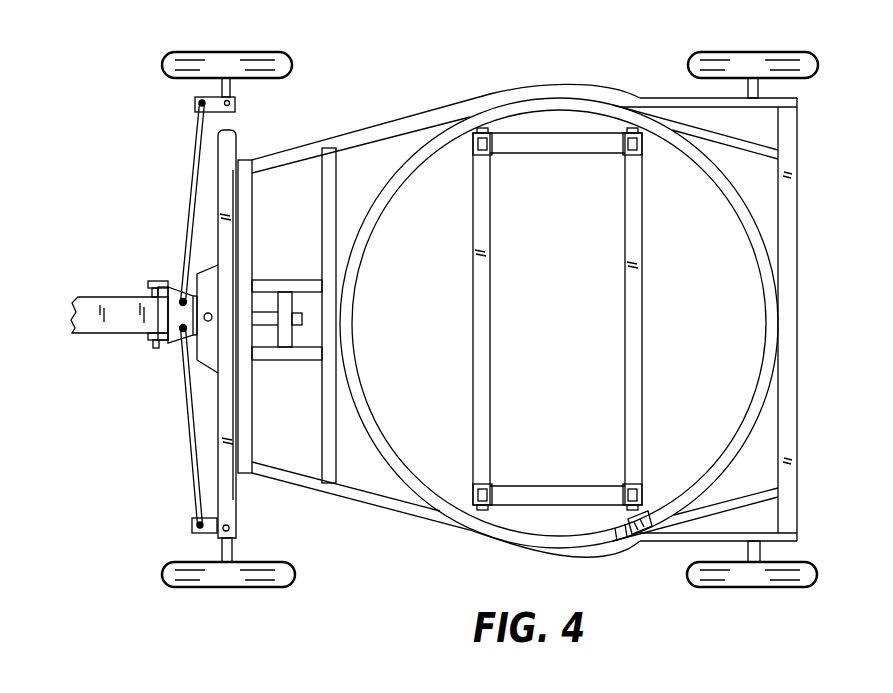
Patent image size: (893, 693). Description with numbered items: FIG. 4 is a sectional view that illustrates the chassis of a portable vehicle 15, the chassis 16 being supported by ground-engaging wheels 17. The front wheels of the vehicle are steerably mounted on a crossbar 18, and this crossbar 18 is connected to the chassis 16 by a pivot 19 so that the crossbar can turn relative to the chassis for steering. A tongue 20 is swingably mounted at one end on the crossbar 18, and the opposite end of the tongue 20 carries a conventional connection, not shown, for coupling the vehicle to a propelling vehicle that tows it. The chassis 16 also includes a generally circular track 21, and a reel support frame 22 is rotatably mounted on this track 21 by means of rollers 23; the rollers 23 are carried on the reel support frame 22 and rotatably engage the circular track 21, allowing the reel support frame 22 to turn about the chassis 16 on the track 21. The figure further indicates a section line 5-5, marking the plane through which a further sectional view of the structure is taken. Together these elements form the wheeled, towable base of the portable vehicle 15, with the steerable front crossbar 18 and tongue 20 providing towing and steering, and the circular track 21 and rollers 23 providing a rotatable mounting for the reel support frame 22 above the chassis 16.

The portable vehicle 15 is at (419, 96).
The chassis 16 is at (359, 130).
The ground-engaging wheels 17 is at (250, 62).
The crossbar 18 is at (234, 141).
The pivot 19 is at (297, 312).
The tongue 20 is at (112, 297).
The circular track 21 is at (373, 215).
The reel support frame 22 is at (490, 246).
The rollers 23 is at (637, 528).
The section line 5- 5 is at (483, 433).